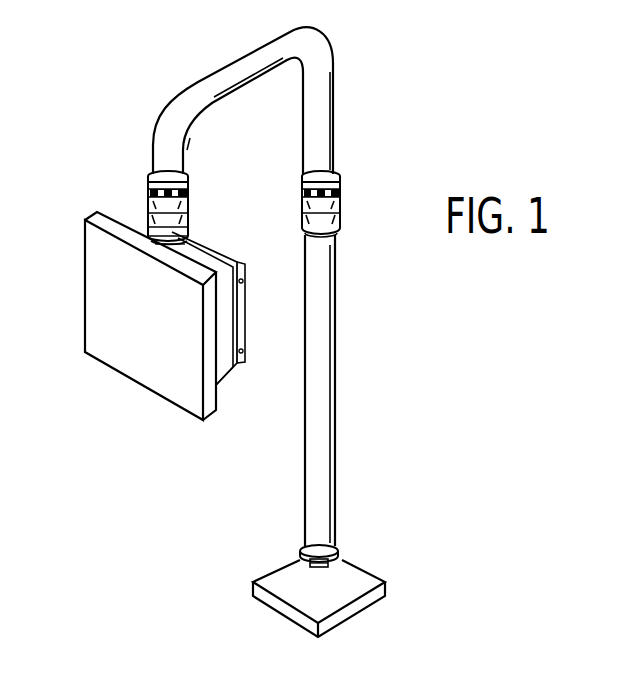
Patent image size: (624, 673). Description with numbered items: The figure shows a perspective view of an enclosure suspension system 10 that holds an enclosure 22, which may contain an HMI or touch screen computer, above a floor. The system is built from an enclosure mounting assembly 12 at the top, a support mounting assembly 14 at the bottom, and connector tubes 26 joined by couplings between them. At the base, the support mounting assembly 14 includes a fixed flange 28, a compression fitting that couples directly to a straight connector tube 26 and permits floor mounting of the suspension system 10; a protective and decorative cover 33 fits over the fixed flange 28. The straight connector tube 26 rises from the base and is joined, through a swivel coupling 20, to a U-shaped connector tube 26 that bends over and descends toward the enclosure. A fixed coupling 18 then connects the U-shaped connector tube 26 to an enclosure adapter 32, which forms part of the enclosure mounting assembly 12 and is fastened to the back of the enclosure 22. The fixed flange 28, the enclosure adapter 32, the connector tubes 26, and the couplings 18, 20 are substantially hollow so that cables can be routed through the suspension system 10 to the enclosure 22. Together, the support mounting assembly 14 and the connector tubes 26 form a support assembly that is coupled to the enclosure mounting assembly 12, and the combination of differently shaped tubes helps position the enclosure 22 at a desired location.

The enclosure suspension system 10 is at (118, 100).
The enclosure mounting assembly 12 is at (147, 233).
The support mounting assembly 14 is at (291, 548).
The fixed coupling 18 is at (167, 204).
The swivel coupling 20 is at (340, 181).
The enclosure 22 is at (108, 325).
The connector tube 26 is at (247, 57).
The fixed flange 28 is at (347, 555).
The enclosure adapter 32 is at (195, 243).
The cover 33 is at (288, 585).